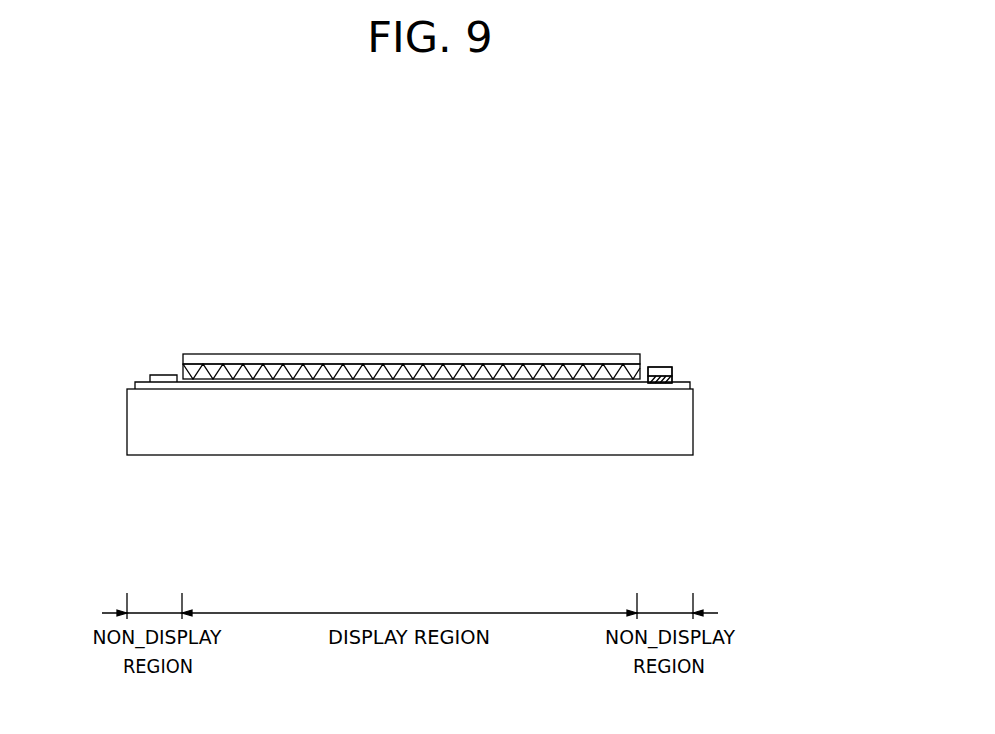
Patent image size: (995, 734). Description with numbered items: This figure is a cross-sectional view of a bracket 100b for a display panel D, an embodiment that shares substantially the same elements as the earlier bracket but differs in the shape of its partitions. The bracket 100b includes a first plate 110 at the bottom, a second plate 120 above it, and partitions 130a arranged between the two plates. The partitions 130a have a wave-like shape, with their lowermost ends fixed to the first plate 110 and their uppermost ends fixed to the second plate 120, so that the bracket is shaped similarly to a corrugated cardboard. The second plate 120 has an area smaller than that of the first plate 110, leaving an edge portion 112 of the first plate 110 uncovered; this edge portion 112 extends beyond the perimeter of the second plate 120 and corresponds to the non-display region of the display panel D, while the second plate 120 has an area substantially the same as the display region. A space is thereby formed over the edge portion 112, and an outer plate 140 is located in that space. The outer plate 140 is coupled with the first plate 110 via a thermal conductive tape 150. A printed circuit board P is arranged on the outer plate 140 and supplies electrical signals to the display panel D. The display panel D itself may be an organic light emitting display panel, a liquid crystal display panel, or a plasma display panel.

The bracket 100b is at (392, 263).
The display panel D is at (127, 423).
The first plate 110 is at (410, 382).
The edge portion 112 is at (175, 382).
The second plate 120 is at (408, 354).
The partitions 130a is at (187, 367).
The printed circuit board P is at (658, 367).
The outer plate 140 is at (680, 390).
The thermal conductive tape 150 is at (662, 383).